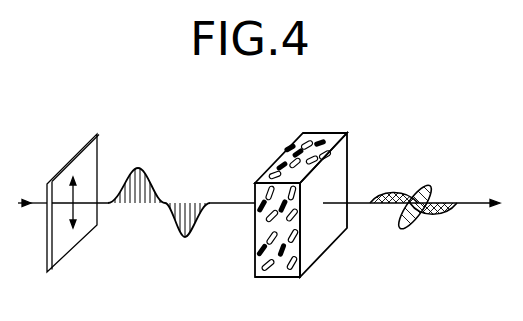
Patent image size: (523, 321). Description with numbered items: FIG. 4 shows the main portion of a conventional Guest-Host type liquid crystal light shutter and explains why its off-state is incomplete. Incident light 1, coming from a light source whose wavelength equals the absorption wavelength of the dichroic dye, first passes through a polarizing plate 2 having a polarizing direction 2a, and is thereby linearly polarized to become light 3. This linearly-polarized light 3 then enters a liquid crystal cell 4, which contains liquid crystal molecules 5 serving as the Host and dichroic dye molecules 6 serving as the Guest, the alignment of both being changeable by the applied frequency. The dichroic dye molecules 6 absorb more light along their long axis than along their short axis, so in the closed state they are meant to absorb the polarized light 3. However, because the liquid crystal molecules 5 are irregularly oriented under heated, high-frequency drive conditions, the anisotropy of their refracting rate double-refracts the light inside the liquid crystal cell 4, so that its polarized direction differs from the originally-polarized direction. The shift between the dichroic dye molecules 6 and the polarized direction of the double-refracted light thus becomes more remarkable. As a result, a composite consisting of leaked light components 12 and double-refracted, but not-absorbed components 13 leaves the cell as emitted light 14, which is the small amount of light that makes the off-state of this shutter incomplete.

The incident light 1 is at (35, 210).
The polarizing plate 2 is at (98, 133).
The polarizing direction 2a is at (71, 232).
The light 3 is at (148, 168).
The liquid crystal cell 4 is at (333, 134).
The liquid crystal molecules 5 is at (293, 279).
The dichroic dye molecules 6 is at (282, 258).
The leaked light components 12 is at (386, 191).
The double-refracted, but not-absorbed components 13 is at (421, 192).
The emitted light 14 is at (482, 201).